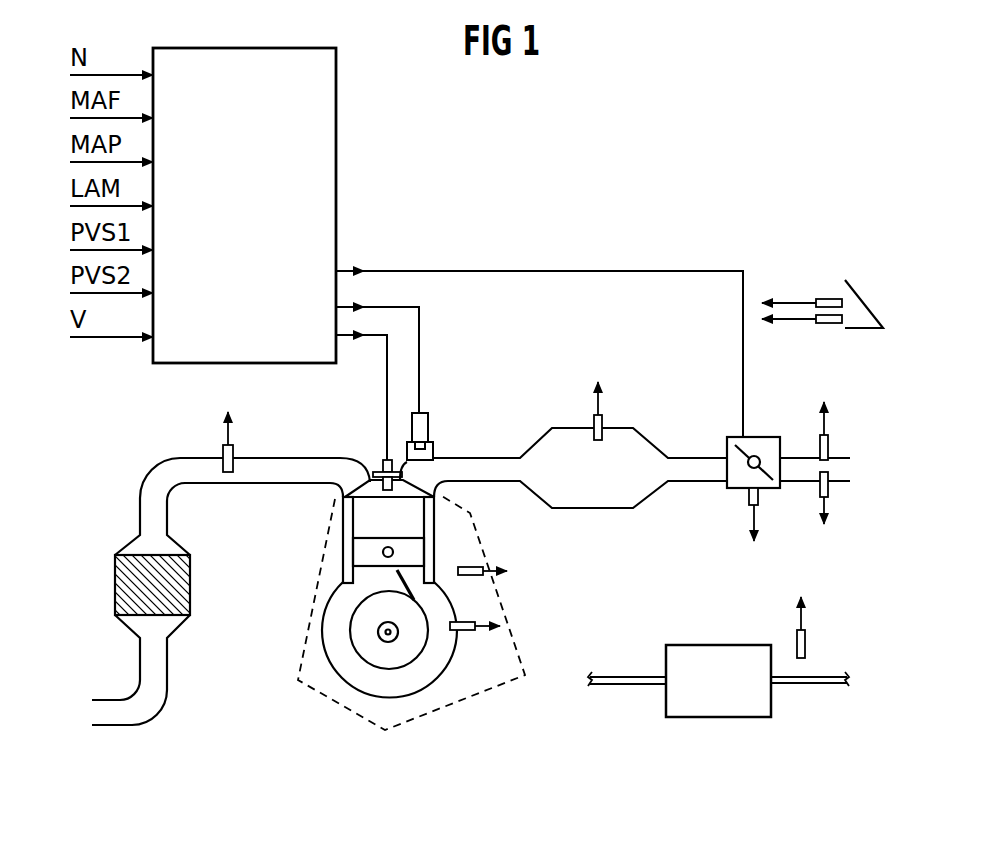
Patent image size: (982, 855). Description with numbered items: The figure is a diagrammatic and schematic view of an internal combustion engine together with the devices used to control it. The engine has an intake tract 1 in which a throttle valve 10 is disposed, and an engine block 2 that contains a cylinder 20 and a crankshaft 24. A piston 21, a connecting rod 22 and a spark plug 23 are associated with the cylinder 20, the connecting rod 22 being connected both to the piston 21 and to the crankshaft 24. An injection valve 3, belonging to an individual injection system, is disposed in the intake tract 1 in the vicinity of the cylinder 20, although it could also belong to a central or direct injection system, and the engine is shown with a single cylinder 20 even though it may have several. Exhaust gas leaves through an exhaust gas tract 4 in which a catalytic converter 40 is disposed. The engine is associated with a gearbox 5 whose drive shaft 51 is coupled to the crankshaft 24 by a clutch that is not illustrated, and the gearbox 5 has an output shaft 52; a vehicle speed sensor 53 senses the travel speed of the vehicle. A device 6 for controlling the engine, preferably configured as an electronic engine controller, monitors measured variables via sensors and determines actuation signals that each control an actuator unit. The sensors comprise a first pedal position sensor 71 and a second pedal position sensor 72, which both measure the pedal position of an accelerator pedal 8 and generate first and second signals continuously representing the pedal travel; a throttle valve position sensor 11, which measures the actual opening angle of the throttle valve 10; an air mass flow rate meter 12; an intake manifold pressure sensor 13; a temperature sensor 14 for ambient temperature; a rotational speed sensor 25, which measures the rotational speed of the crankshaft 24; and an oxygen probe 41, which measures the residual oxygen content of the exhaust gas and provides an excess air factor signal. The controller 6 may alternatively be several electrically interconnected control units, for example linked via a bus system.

The intake tract 1 is at (603, 500).
The engine block 2 is at (453, 703).
The injection valve 3 is at (434, 425).
The exhaust gas tract 4 is at (140, 508).
The gearbox 5 is at (718, 717).
The device for controlling the internal combustion engine 6 is at (327, 145).
The accelerator pedal 8 is at (860, 294).
The throttle valve 10 is at (735, 437).
The throttle valve position sensor 11 is at (749, 495).
The air mass flow rate meter 12 is at (820, 445).
The intake manifold pressure sensor 13 is at (594, 420).
The temperature sensor 14 is at (830, 485).
The cylinder 20 is at (343, 557).
The piston 21 is at (413, 552).
The connecting rod 22 is at (420, 594).
The spark plug 23 is at (376, 463).
The crankshaft 24 is at (378, 636).
The rotational speed sensor 25 is at (470, 632).
The catalytic converter 40 is at (190, 600).
The oxygen probe 41 is at (233, 452).
The drive shaft 51 is at (625, 687).
The output shaft 52 is at (812, 687).
The vehicle speed sensor 53 is at (806, 643).
The first pedal position sensor 71 is at (823, 298).
The second pedal position sensor 72 is at (821, 324).